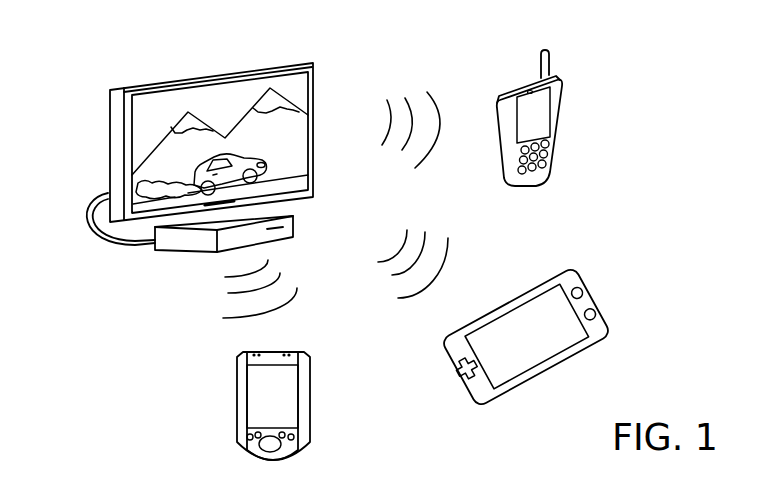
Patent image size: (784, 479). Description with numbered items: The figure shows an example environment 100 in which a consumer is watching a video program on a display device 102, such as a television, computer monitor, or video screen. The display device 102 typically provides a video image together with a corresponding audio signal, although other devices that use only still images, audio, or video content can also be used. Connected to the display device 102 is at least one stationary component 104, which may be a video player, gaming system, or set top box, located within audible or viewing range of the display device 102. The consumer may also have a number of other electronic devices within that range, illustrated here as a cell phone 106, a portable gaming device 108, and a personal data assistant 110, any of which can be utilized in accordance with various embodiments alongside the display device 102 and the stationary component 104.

The environment 100 is at (704, 108).
The display device 102 is at (110, 148).
The stationary component 104 is at (157, 248).
The cell phone 106 is at (562, 125).
The portable gaming device 108 is at (608, 322).
The personal data assistant (PDA) 110 is at (237, 380).